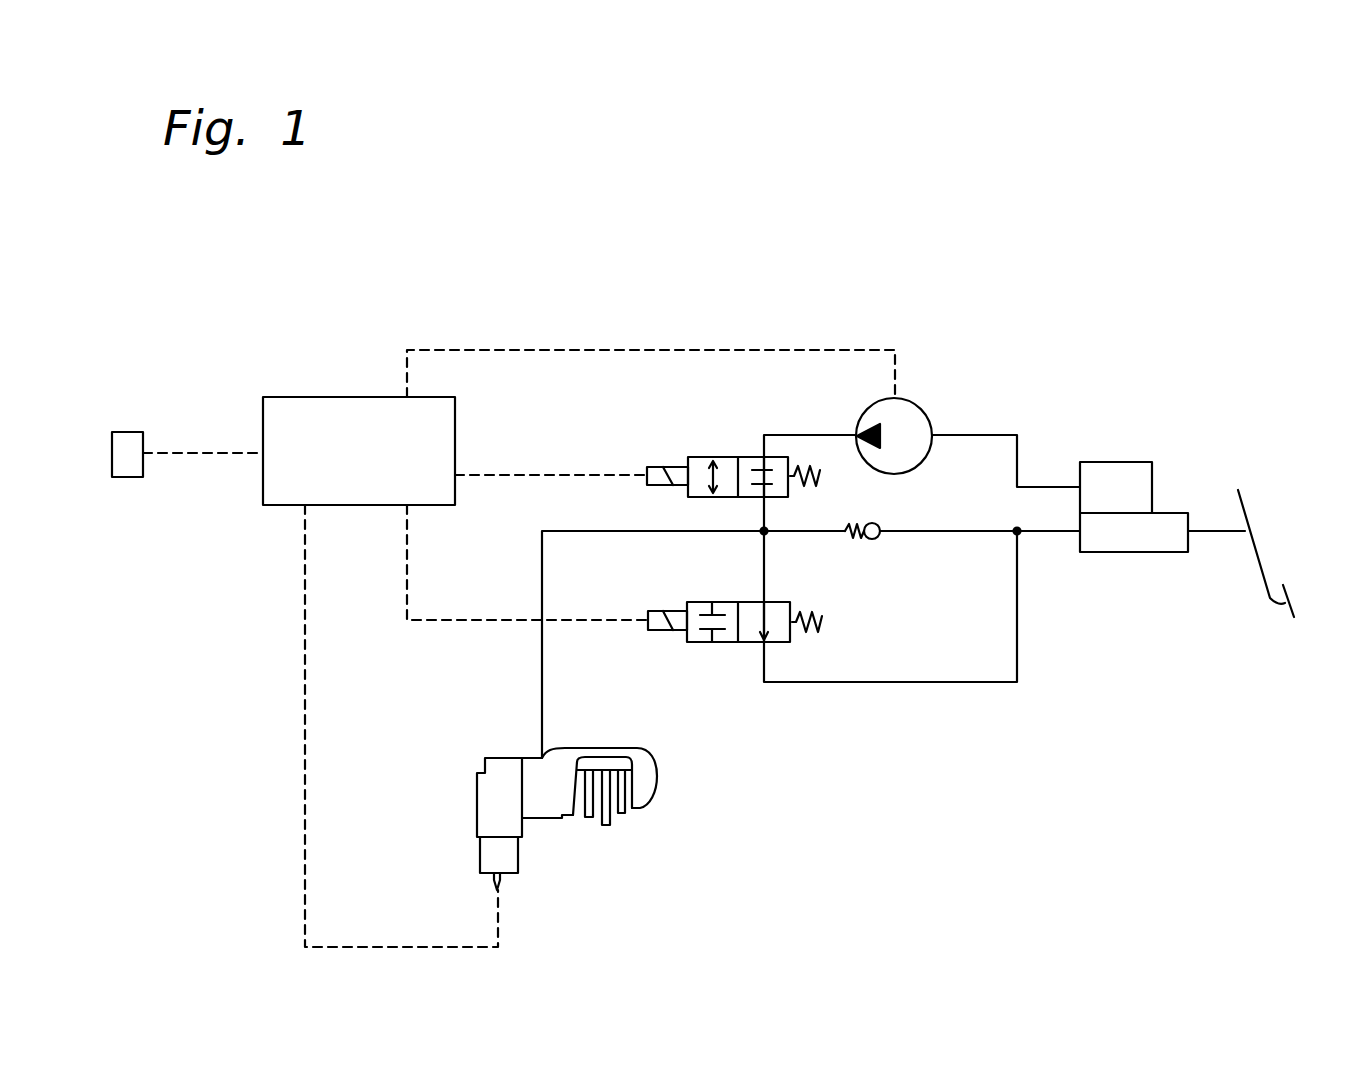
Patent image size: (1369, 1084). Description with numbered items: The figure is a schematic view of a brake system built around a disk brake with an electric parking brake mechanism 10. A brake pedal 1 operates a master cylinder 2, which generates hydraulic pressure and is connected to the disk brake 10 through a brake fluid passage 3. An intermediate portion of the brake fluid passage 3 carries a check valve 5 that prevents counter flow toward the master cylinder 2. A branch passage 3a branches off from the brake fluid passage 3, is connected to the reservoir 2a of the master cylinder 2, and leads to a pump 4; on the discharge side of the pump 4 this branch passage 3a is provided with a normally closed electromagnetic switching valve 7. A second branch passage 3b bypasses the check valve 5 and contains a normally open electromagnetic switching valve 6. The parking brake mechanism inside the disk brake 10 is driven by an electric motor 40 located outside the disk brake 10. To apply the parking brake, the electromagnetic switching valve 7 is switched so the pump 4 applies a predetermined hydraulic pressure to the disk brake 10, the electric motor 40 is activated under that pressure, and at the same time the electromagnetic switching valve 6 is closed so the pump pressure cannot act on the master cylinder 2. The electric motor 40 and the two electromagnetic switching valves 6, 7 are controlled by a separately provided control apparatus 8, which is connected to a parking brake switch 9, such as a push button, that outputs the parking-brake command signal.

The brake pedal 1 is at (1265, 557).
The master cylinder 2 is at (1140, 540).
The reservoir 2a is at (1120, 475).
The brake fluid passage 3 is at (975, 535).
The branch passage 3a is at (803, 435).
The branch passage 3b is at (973, 683).
The pump 4 is at (907, 432).
The check valve 5 is at (880, 540).
The electromagnetic switching valve 6 is at (730, 643).
The electromagnetic switching valve 7 is at (700, 457).
The control apparatus 8 is at (333, 397).
The parking brake switch 9 is at (125, 432).
The disk brake with electric parking brake mechanism 10 is at (668, 811).
The electric motor 40 is at (505, 853).